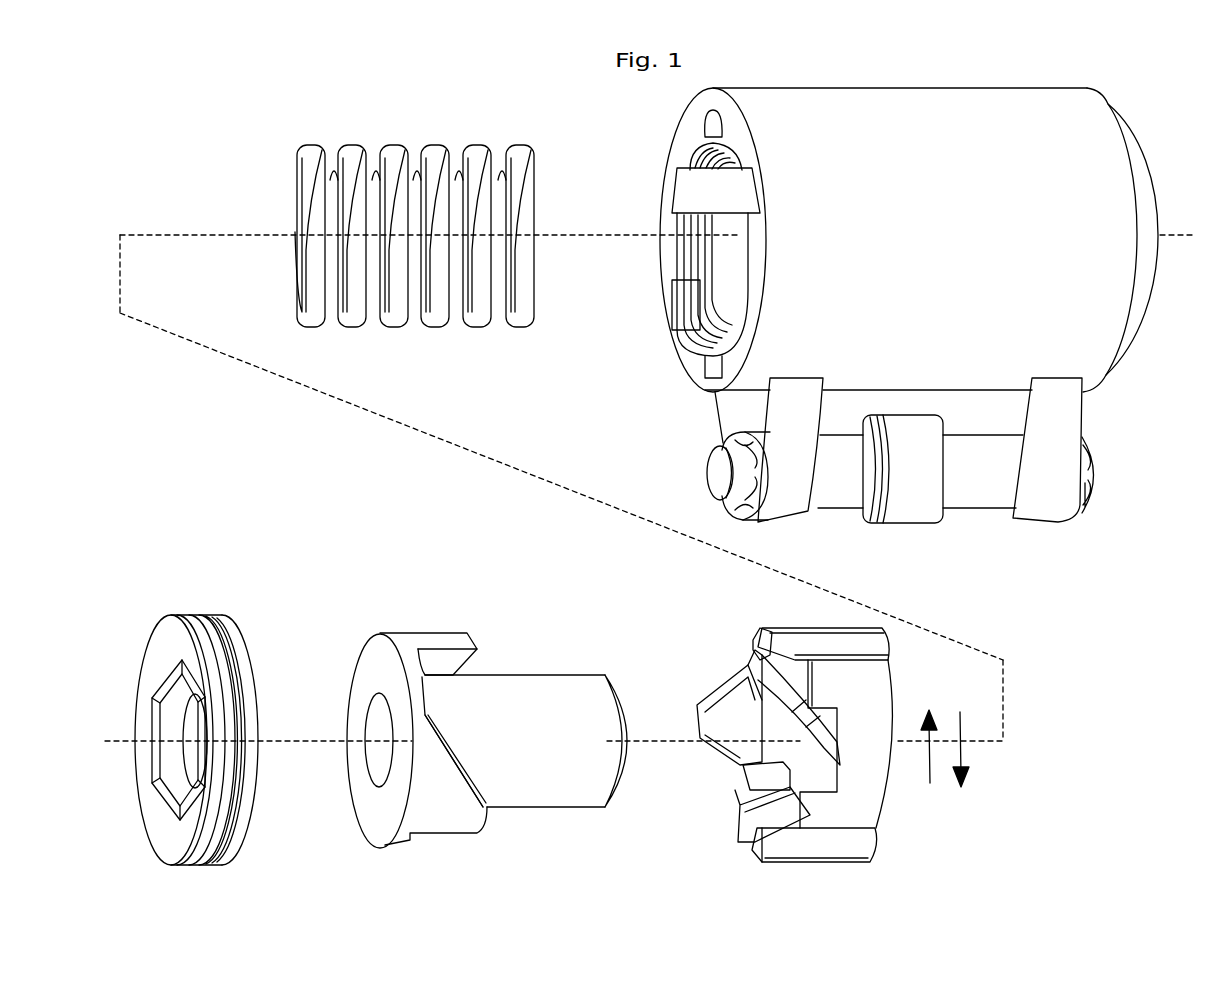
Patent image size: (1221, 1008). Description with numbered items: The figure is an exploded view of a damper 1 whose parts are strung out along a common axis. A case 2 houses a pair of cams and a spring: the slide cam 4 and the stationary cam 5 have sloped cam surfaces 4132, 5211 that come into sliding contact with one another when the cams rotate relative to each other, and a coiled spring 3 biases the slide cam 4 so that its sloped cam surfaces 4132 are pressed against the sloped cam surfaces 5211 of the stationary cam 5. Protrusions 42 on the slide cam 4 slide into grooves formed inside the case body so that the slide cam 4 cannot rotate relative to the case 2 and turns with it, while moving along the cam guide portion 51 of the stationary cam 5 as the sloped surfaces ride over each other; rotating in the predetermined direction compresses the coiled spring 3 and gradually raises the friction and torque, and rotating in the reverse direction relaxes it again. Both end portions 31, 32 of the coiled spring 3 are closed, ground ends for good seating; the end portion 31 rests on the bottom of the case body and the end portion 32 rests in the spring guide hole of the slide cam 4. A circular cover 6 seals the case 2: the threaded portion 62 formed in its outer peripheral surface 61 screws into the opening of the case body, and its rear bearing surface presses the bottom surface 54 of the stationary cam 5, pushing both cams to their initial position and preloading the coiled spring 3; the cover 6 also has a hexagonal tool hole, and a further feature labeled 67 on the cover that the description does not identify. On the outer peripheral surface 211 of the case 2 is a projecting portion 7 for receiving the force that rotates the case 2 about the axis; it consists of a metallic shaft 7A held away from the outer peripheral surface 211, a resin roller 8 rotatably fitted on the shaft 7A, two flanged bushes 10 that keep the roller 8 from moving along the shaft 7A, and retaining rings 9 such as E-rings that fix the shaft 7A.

The damper 1 is at (203, 104).
The case 2 is at (1080, 88).
The outer peripheral surface 211 is at (912, 100).
The coiled spring 3 is at (452, 147).
The end portion 31 is at (535, 182).
The end portion 32 is at (295, 312).
The slide cam 4 is at (893, 702).
The protrusions 42 is at (798, 638).
The sloped cam surfaces 4132 is at (745, 690).
The stationary cam 5 is at (545, 674).
The cam guide portion 51 is at (582, 682).
The bottom surface 54 is at (368, 803).
The sloped cam surfaces 5211 is at (476, 773).
The cover 6 is at (152, 652).
The outer peripheral surface 61 is at (255, 656).
The threaded portion 62 is at (225, 605).
The cap hole 67 is at (192, 758).
The projecting portion 7 is at (700, 446).
The shaft 7A is at (716, 472).
The roller 8 is at (905, 530).
The retaining rings 9 is at (728, 504).
The flanged bushes 10 is at (832, 514).